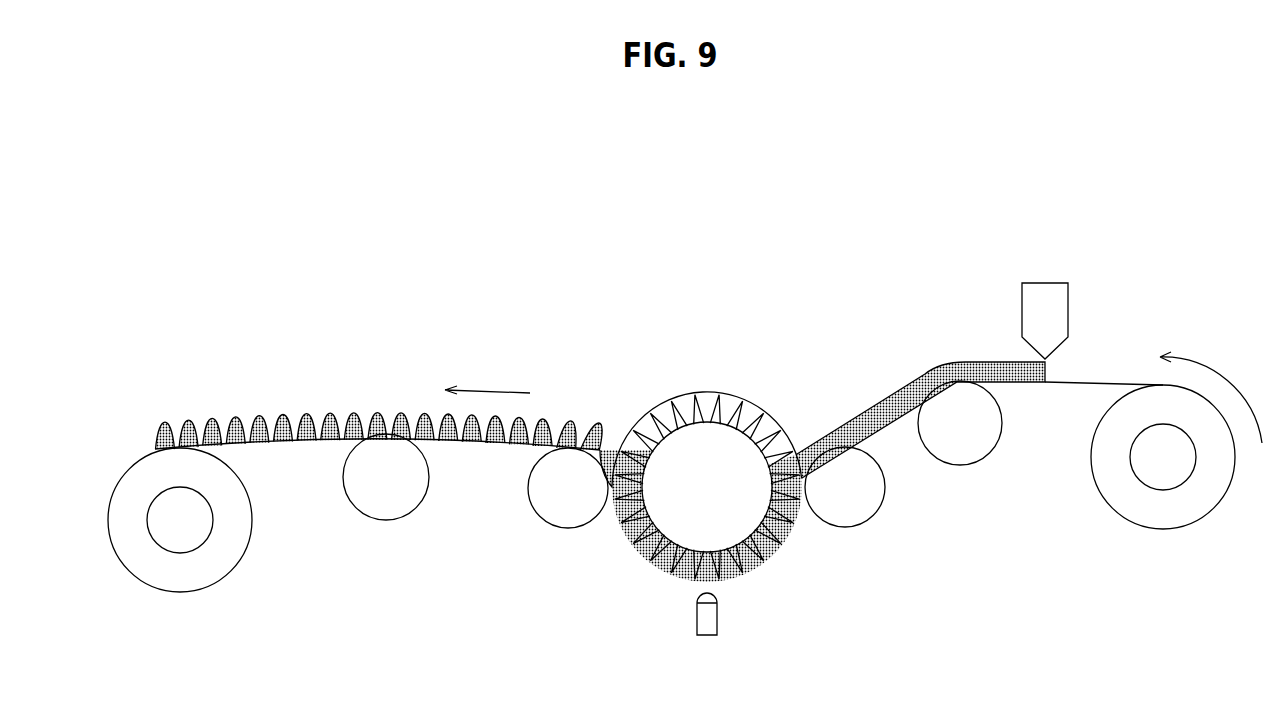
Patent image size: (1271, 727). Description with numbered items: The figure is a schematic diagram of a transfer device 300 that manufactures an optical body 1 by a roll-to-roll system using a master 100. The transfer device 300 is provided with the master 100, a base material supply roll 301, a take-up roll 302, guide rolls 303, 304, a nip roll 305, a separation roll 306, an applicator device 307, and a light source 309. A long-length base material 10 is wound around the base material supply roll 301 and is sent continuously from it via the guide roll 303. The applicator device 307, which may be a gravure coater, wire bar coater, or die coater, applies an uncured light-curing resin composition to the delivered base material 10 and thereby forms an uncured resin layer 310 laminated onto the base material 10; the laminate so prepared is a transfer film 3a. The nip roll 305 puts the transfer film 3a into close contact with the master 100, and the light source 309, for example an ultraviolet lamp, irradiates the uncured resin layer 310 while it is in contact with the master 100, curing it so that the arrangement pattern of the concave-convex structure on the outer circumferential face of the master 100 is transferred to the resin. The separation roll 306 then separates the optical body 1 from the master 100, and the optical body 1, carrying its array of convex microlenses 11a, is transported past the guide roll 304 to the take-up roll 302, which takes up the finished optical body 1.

The transfer device 300 is at (1127, 151).
The optical body 1 is at (378, 379).
The convex microlenses 11a is at (560, 420).
The base material 10 is at (1112, 381).
The master 100 is at (700, 380).
The transfer film 3a is at (957, 349).
The uncured resin layer 310 is at (882, 400).
The applicator device 307 is at (1045, 280).
The light source 309 is at (719, 615).
The base material supply roll 301 is at (1165, 490).
The take-up roll 302 is at (182, 553).
The guide roll 303 is at (963, 465).
The guide roll 304 is at (386, 520).
The nip roll 305 is at (846, 527).
The separation roll 306 is at (568, 528).